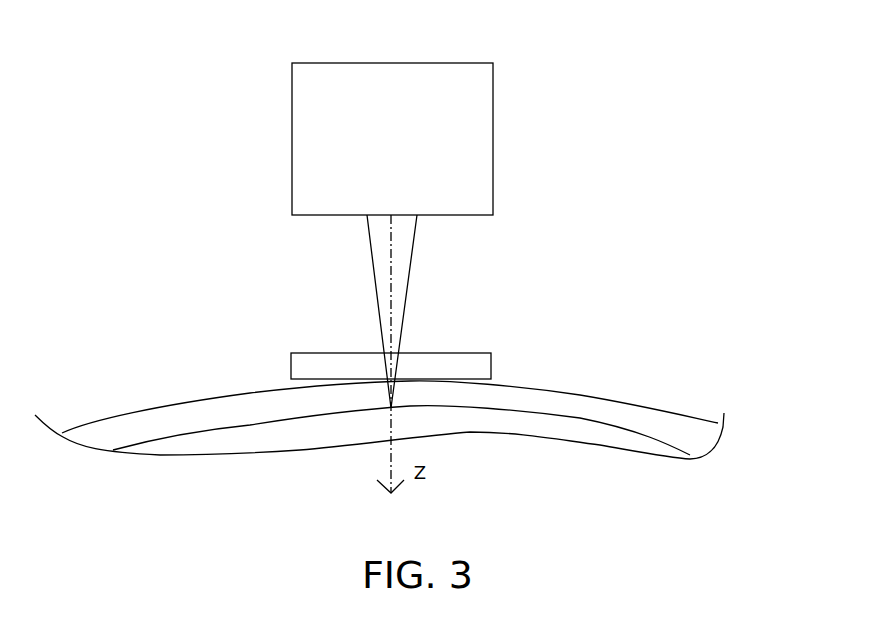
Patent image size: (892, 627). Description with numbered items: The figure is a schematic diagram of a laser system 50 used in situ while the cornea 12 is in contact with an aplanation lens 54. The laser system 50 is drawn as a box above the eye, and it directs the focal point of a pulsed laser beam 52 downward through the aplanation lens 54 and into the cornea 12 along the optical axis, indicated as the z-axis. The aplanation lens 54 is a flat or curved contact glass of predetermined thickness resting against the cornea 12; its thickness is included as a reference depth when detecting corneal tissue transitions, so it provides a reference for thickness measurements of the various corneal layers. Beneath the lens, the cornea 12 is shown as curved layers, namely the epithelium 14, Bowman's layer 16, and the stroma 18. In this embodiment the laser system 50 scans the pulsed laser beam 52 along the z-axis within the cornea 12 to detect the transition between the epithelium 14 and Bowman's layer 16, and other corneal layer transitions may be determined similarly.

The cornea 12 is at (379, 413).
The epithelium 14 is at (632, 403).
The Bowman's layer 16 is at (523, 415).
The stroma 18 is at (265, 442).
The laser system 50 is at (392, 139).
The pulsed laser beam 52 is at (411, 256).
The aplanation lens 54 is at (491, 353).